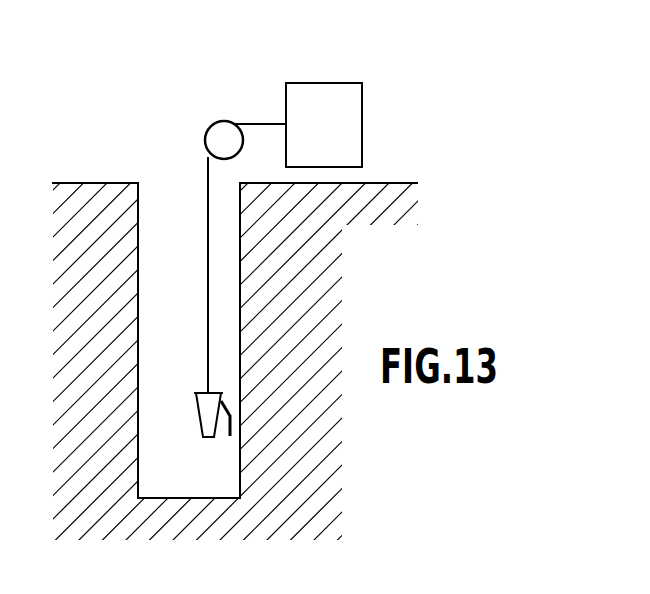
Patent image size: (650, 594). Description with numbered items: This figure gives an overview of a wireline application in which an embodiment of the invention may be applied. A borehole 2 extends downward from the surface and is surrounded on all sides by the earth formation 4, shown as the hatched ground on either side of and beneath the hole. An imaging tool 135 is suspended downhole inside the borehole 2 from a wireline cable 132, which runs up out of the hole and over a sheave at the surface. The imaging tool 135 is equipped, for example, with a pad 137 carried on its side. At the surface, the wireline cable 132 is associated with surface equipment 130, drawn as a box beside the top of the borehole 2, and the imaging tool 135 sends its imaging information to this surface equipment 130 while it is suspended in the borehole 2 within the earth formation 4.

The borehole 2 is at (168, 268).
The earth formation 4 is at (393, 210).
The surface equipment 130 is at (320, 113).
The wireline cable 132 is at (207, 184).
The imaging tool 135 is at (202, 410).
The pad 137 is at (226, 438).